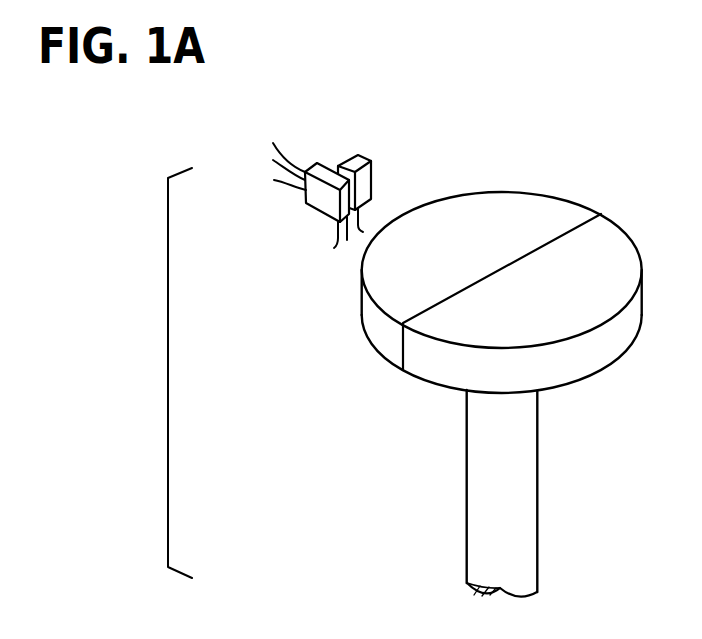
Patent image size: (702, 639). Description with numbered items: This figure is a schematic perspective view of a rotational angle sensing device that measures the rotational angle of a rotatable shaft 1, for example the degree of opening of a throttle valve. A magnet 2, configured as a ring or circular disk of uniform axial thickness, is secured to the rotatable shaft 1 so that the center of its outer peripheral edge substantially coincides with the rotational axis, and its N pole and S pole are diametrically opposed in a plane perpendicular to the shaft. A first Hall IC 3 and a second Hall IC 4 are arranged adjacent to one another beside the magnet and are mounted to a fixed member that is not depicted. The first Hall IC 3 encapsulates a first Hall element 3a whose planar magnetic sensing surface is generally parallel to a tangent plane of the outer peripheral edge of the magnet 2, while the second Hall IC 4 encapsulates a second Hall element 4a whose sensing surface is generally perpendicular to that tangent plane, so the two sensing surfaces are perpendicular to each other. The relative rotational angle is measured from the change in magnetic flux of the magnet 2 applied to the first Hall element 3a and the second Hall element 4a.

The rotatable shaft 1 is at (522, 542).
The magnet 2 is at (598, 233).
The first Hall IC 3 is at (417, 191).
The first Hall element 3a is at (370, 174).
The second Hall IC 4 is at (295, 221).
The second Hall element 4a is at (320, 205).